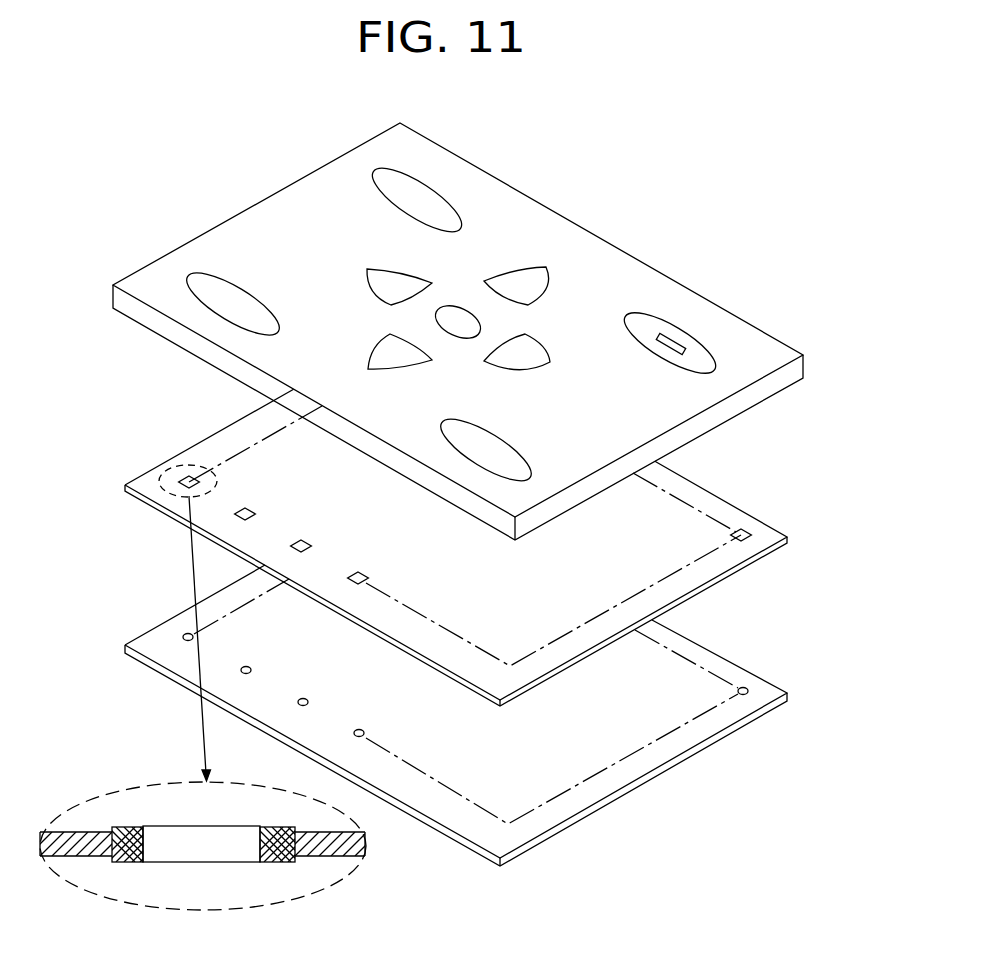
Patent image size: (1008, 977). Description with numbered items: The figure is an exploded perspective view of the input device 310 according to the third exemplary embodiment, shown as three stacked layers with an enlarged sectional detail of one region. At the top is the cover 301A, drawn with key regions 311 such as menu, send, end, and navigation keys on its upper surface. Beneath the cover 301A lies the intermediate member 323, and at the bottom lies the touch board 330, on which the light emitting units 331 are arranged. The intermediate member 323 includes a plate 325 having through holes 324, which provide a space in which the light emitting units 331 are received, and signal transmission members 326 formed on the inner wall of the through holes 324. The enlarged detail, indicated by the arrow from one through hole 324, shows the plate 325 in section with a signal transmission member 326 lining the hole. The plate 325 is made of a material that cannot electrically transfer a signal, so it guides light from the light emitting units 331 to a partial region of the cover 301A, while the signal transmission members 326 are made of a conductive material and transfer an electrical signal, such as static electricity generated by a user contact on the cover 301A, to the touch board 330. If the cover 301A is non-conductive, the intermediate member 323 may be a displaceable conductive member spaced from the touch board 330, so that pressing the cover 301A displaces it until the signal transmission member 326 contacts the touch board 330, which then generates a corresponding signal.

The input device 310 is at (503, 331).
The cover 301A is at (780, 350).
The keys 311 is at (537, 273).
The intermediate member 323 is at (787, 535).
The through holes 324 is at (183, 481).
The plate 325 is at (313, 858).
The signal transmission members 326 is at (138, 863).
The touch board 330 is at (787, 692).
The light emitting units 331 is at (183, 636).